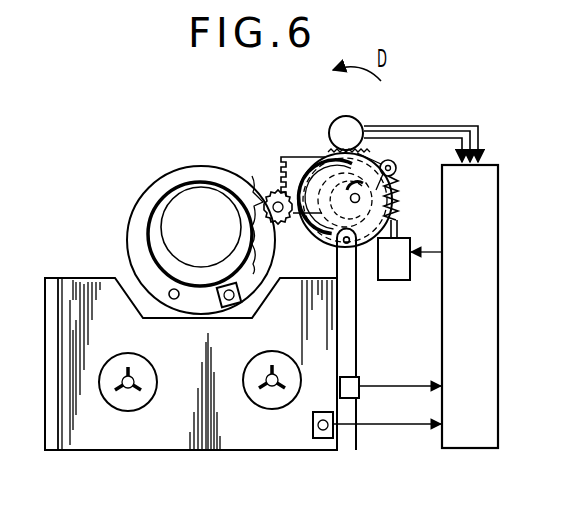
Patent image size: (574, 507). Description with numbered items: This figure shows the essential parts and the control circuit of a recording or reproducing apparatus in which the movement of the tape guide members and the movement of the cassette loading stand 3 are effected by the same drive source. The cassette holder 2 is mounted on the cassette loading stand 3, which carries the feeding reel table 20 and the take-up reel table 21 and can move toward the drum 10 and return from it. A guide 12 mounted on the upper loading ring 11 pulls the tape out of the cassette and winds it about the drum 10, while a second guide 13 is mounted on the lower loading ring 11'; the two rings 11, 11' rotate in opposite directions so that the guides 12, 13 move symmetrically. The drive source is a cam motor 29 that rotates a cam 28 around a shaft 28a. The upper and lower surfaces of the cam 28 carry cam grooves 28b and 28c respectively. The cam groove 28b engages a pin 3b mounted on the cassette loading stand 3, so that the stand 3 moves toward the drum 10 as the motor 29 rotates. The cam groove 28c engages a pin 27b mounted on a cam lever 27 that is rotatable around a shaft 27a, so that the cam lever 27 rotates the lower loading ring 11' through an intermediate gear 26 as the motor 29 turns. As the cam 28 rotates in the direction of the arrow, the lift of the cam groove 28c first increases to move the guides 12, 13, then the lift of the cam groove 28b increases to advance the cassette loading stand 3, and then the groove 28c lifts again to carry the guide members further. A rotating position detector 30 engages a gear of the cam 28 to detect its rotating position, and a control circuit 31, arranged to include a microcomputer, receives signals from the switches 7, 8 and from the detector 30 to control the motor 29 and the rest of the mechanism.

The cassette holder 2 is at (291, 444).
The cassette loading stand 3 is at (348, 325).
The pin 3b is at (350, 250).
The switch 7 is at (356, 380).
The switch 8 is at (323, 438).
The drum 10 is at (198, 190).
The upper loading ring 11 is at (184, 240).
The lower loading ring 11' is at (248, 209).
The guide 12 is at (172, 300).
The second guide 13 is at (230, 306).
The feeding reel table 20 is at (153, 393).
The take-up reel table 21 is at (250, 386).
The intermediate gear 26 is at (271, 191).
The cam lever 27 is at (293, 165).
The shaft 27a is at (396, 168).
The pin 27b is at (322, 153).
The cam 28 is at (390, 186).
The shaft 28a is at (360, 197).
The cam groove 28b is at (312, 224).
The cam groove 28c is at (357, 186).
The cam motor 29 is at (410, 280).
The rotating position detector 30 is at (351, 119).
The control circuit 31 is at (497, 165).